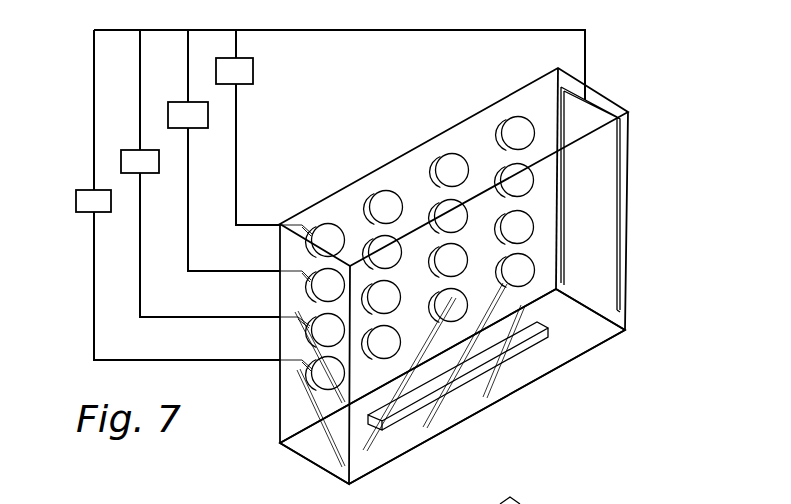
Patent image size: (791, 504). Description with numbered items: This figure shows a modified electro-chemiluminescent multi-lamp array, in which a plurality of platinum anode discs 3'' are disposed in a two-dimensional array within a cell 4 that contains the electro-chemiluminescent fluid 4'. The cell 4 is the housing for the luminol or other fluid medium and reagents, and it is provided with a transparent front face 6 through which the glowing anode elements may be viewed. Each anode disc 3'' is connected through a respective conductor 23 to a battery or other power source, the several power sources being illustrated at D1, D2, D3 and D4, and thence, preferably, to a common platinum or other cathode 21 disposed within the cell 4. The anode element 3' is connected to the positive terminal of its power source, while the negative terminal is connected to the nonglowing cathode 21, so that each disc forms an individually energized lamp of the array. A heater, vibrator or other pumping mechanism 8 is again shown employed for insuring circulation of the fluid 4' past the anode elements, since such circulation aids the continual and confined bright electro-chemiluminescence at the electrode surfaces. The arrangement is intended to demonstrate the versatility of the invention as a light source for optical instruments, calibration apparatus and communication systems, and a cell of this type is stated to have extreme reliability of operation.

The power source D1 is at (234, 71).
The power source D2 is at (188, 115).
The power source D3 is at (140, 162).
The power source D4 is at (93, 201).
The conductor 23 is at (188, 183).
The cell 4 is at (464, 276).
The electro-chemiluminescent fluid 4' is at (463, 386).
The common cathode 21 is at (600, 157).
The anode electrode 3' is at (443, 238).
The platinum anode disc 3'' is at (297, 285).
The transparent front face 6 is at (378, 440).
The pumping mechanism 8 is at (480, 372).